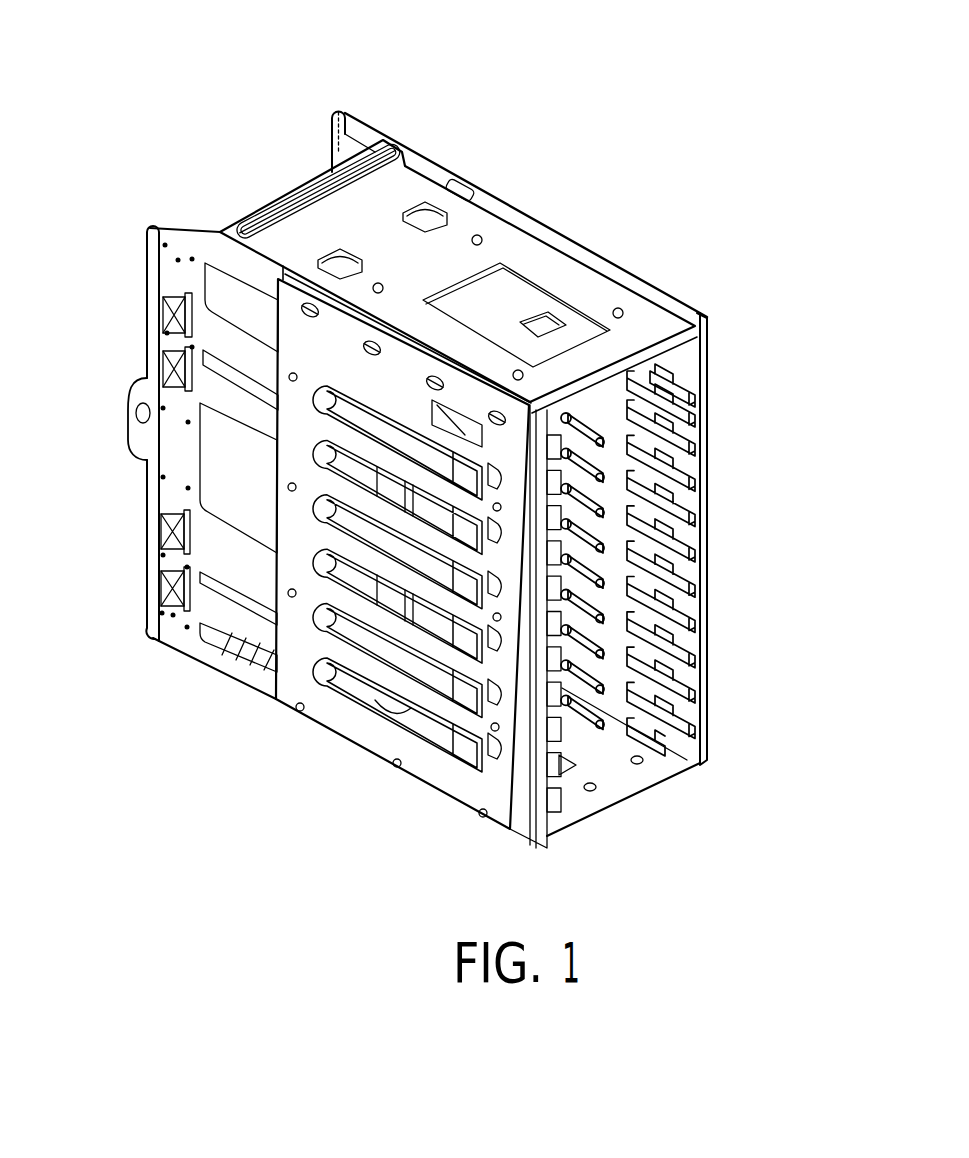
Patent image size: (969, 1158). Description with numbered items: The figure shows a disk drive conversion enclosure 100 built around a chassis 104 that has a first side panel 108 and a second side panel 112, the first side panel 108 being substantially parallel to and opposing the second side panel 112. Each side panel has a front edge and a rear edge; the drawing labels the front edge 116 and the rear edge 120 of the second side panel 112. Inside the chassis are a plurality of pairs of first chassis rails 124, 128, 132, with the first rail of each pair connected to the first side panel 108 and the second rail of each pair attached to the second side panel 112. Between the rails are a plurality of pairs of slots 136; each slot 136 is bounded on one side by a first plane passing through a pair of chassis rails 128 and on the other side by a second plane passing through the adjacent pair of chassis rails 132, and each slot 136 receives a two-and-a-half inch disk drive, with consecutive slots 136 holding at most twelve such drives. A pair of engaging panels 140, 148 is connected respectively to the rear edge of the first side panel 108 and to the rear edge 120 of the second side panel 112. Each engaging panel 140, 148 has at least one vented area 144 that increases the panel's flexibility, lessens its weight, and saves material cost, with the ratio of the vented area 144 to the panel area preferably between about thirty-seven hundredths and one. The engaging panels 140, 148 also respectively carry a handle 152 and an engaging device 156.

The disk drive conversion enclosure 100 is at (441, 446).
The chassis 104 is at (563, 234).
The first side panel 108 is at (683, 748).
The second side panel 112 is at (440, 787).
The front edge 116 is at (493, 832).
The rear edge 120 is at (153, 490).
The first chassis rails 124 is at (690, 738).
The chassis rails 128 is at (695, 384).
The chassis rails 132 is at (706, 418).
The slot 136 is at (678, 393).
The engaging panel 140 is at (340, 106).
The vented area 144 is at (211, 285).
The engaging panel 148 is at (150, 230).
The handle 152 is at (137, 415).
The engaging device 156 is at (168, 373).